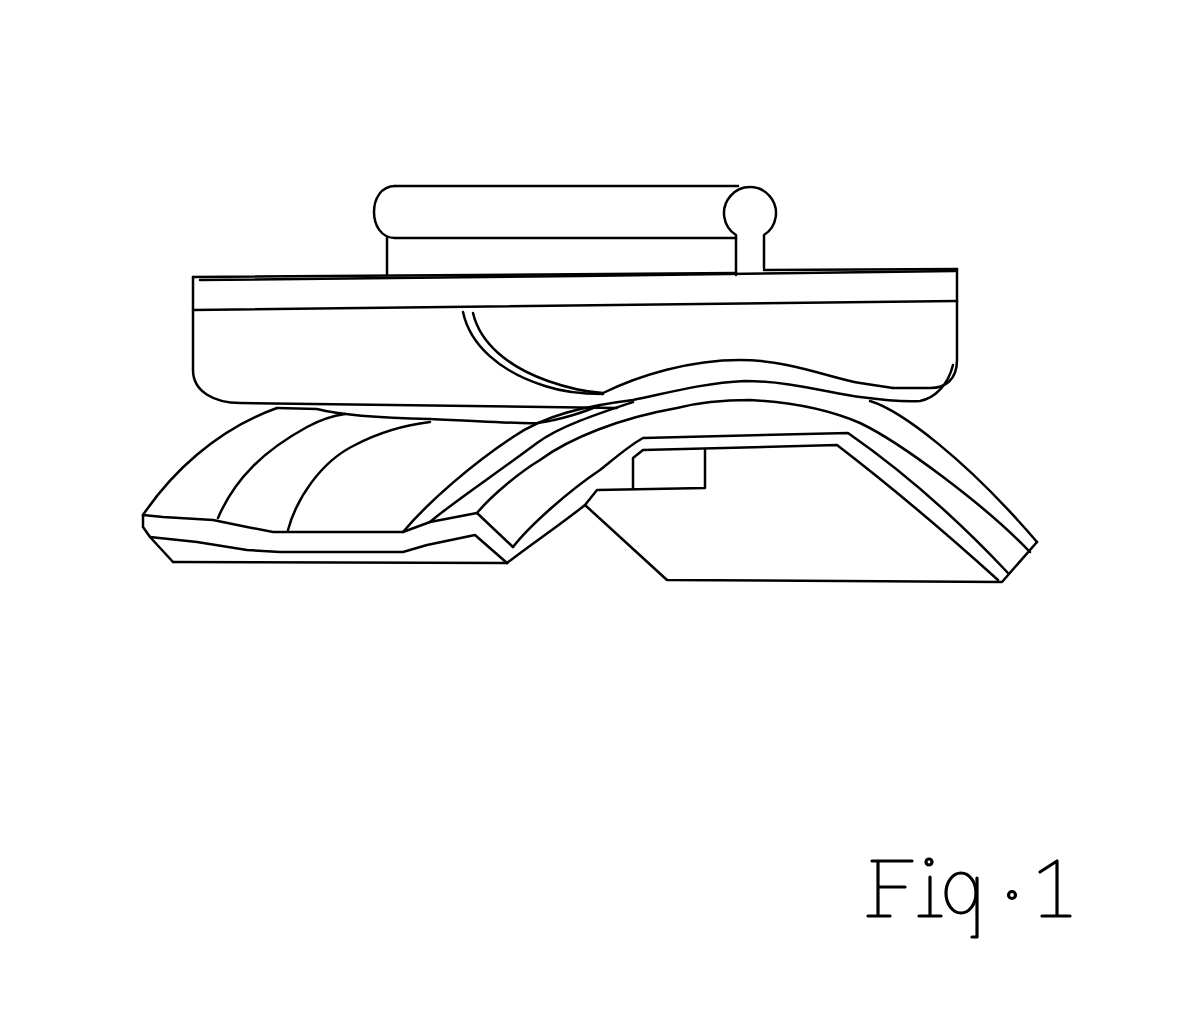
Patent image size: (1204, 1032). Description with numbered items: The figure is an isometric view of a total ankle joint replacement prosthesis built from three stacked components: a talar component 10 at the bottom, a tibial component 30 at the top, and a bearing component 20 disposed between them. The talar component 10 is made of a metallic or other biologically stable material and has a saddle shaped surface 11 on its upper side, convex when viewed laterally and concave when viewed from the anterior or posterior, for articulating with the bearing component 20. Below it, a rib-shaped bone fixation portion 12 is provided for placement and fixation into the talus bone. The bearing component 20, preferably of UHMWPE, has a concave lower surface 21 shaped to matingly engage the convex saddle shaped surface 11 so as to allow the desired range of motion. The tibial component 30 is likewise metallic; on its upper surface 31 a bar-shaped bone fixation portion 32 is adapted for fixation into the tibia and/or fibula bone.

The talar component 10 is at (1065, 585).
The saddle shaped surface 11 is at (383, 500).
The bone fixation portion 12 is at (667, 490).
The bearing component 20 is at (1097, 396).
The lower surface 21 is at (670, 391).
The tibial component 30 is at (962, 300).
The upper surface 31 is at (331, 272).
The bone fixation portion 32 is at (583, 224).